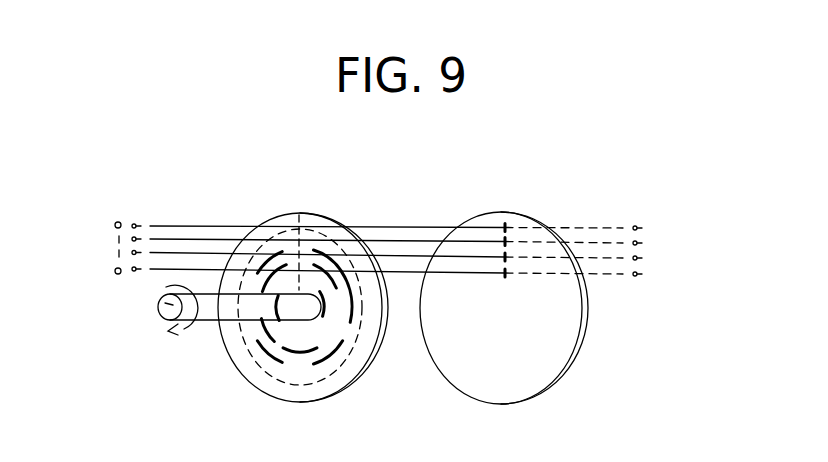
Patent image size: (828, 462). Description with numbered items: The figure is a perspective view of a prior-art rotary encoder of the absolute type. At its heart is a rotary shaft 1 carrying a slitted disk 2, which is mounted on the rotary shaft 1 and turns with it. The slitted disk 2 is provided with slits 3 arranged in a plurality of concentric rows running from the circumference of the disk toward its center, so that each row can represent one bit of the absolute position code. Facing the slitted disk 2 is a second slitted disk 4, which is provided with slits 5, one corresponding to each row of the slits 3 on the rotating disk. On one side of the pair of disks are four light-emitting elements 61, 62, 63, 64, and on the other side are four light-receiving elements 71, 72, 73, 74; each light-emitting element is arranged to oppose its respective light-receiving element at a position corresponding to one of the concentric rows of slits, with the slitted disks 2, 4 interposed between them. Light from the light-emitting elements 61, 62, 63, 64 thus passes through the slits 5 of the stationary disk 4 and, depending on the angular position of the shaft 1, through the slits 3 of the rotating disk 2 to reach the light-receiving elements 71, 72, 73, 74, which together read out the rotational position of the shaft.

The rotary shaft 1 is at (152, 311).
The slitted disk 2 is at (362, 345).
The slits 3 is at (336, 241).
The slitted disk 4 is at (543, 373).
The slits 5 is at (505, 222).
The light-emitting element 61 is at (648, 230).
The light-emitting element 62 is at (650, 243).
The light-emitting element 63 is at (648, 262).
The light-emitting element 64 is at (648, 279).
The light-receiving element 71 is at (112, 223).
The light-receiving element 72 is at (112, 240).
The light-receiving element 73 is at (112, 255).
The light-receiving element 74 is at (112, 274).